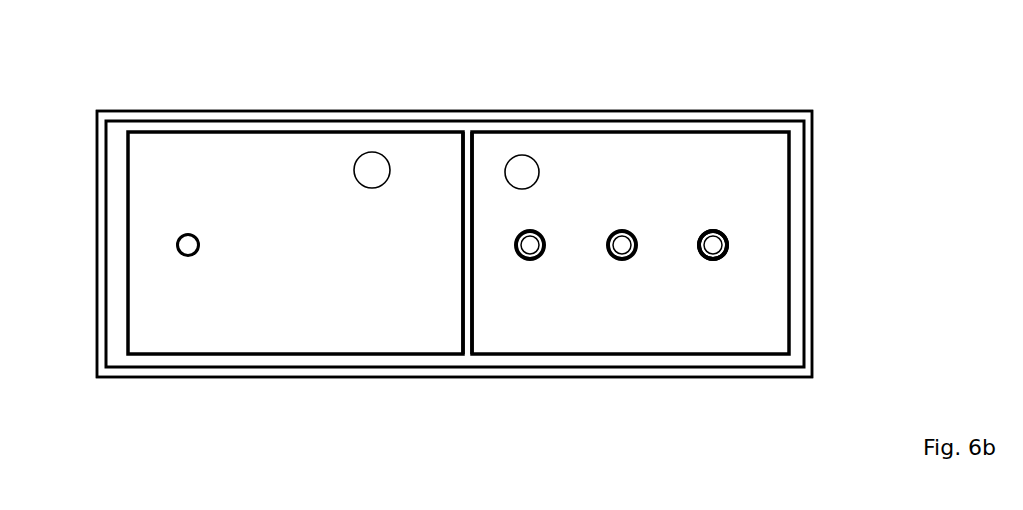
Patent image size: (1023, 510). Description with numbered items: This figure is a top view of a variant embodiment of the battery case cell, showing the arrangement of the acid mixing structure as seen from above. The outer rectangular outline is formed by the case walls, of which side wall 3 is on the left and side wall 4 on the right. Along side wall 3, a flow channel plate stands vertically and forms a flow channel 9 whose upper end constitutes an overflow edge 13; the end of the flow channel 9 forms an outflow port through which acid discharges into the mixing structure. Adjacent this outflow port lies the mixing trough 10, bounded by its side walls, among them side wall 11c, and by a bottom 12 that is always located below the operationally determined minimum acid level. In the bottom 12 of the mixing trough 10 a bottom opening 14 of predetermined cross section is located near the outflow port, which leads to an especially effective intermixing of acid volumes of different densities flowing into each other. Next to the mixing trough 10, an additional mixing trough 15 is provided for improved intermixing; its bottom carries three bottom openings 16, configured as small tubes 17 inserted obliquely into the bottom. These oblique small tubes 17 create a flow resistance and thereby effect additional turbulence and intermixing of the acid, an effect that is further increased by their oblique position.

The side wall 3 is at (102, 320).
The side wall 4 is at (805, 265).
The flow channel 9 is at (120, 205).
The mixing trough 10 is at (372, 170).
The side wall of mixing trough 11c is at (468, 183).
The bottom of mixing trough 12 is at (257, 196).
The overflow edge 13 is at (132, 160).
The bottom opening 14 is at (188, 240).
The additional mixing trough 15 is at (522, 172).
The bottom openings 16 is at (533, 240).
The small tubes 17 is at (730, 237).